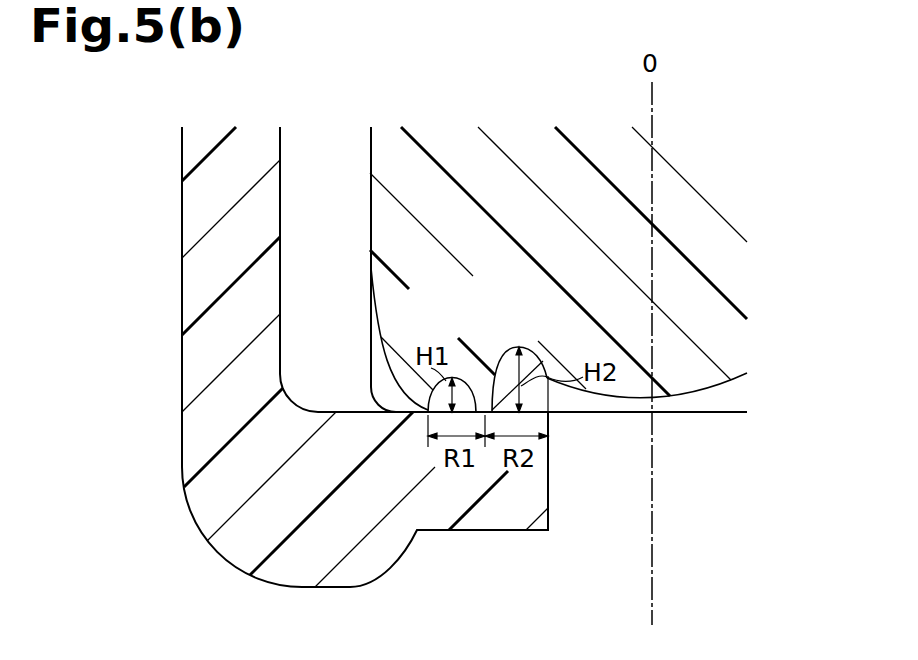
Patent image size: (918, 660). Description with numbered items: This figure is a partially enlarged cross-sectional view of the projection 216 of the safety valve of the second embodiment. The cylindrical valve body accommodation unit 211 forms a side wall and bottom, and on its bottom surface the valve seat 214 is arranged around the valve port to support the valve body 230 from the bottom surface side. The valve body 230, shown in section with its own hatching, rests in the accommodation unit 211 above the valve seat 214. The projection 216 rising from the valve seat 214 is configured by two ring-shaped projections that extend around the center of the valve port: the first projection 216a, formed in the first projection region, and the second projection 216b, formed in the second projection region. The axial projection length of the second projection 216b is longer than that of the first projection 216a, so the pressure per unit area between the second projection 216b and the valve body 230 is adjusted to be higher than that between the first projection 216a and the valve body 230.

The valve body accommodation unit 211 is at (281, 163).
The valve seat 214 is at (497, 516).
The projection 216 is at (494, 328).
The first projection 216a is at (451, 377).
The second projection 216b is at (542, 318).
The valve body 230 is at (727, 273).